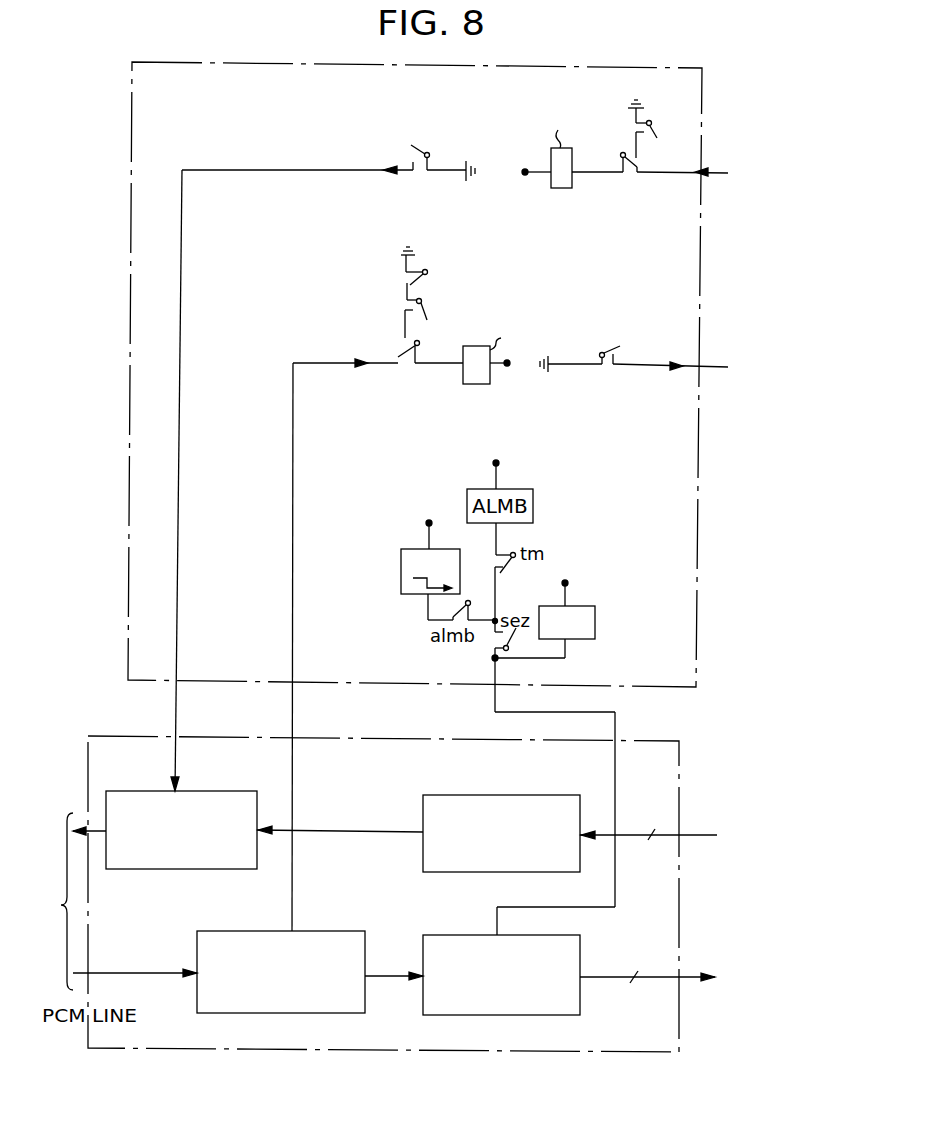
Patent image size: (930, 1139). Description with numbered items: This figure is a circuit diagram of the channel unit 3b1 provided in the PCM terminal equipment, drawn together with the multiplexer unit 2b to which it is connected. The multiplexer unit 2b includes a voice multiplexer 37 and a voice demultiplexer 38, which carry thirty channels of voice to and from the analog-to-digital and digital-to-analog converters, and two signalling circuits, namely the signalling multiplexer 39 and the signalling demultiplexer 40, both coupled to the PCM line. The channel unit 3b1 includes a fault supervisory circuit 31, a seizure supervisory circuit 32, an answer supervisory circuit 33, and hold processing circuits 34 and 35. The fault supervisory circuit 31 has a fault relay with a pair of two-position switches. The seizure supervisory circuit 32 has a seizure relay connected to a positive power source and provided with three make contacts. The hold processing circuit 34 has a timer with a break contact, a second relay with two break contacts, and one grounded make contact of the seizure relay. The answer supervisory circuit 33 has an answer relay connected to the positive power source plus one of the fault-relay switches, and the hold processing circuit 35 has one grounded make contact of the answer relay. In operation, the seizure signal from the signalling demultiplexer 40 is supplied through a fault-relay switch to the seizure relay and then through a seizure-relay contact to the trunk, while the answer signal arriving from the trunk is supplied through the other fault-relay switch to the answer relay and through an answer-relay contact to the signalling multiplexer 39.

The channel unit 3b1 is at (702, 103).
The multiplexer unit 2b is at (679, 764).
The fault supervisory circuit 31 is at (595, 620).
The seizure supervisory circuit 32 is at (473, 387).
The answer supervisory circuit 33 is at (560, 190).
The hold processing circuit 34 is at (608, 374).
The hold processing circuit 35 is at (420, 178).
The voice multiplexer 37 is at (545, 795).
The voice demultiplexer 38 is at (580, 950).
The signalling multiplexer 39 is at (232, 791).
The signalling demultiplexer 40 is at (338, 931).